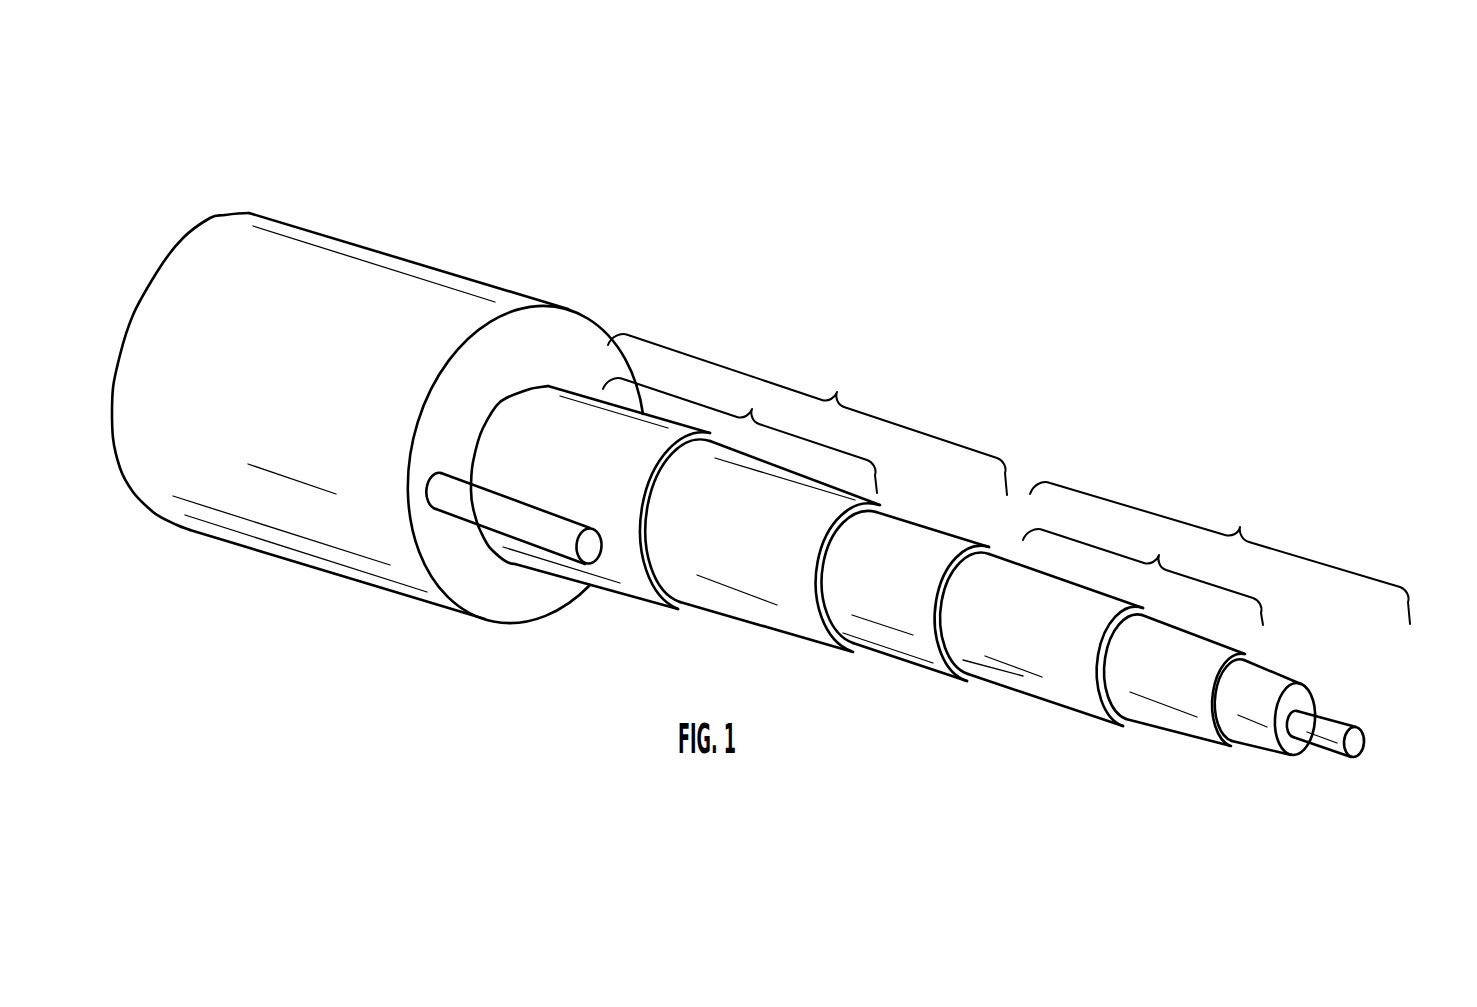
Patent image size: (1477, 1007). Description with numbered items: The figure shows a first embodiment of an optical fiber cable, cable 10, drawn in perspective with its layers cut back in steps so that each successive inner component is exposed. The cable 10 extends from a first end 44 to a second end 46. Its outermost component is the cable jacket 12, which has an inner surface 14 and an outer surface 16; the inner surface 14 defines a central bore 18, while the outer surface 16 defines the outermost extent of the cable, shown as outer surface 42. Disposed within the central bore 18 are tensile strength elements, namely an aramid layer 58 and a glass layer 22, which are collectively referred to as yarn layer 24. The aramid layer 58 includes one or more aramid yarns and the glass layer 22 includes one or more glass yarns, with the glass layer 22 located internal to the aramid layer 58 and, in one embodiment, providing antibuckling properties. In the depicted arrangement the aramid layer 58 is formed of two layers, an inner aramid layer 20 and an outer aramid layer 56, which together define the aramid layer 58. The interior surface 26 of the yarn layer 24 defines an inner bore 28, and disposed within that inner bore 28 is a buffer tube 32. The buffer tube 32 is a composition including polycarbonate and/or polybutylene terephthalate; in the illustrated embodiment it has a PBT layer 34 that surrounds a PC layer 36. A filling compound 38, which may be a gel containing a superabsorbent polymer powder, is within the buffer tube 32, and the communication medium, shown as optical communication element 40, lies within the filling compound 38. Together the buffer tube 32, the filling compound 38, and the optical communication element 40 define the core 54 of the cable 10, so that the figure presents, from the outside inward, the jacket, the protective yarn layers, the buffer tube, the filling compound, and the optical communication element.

The cable 10 is at (765, 452).
The cable jacket 12 is at (361, 412).
The inner surface 14 is at (590, 486).
The outer surface 16 is at (365, 540).
The central bore 18 is at (527, 387).
The inner aramid layer 20 is at (762, 543).
The glass layer 22 is at (900, 635).
The yarn layer 24 is at (807, 414).
The interior surface 26 is at (953, 660).
The inner bore 28 is at (953, 603).
The buffer tube 32 is at (1143, 571).
The PBT layer 34 is at (1077, 677).
The PC layer 36 is at (1183, 688).
The filling compound 38 is at (1253, 713).
The optical communication element 40 is at (939, 653).
The outer surface 42 is at (248, 443).
The first end 44 is at (165, 238).
The second end 46 is at (1380, 750).
The core 54 is at (1220, 553).
The outer aramid layer 56 is at (620, 550).
The aramid layer 58 is at (740, 435).